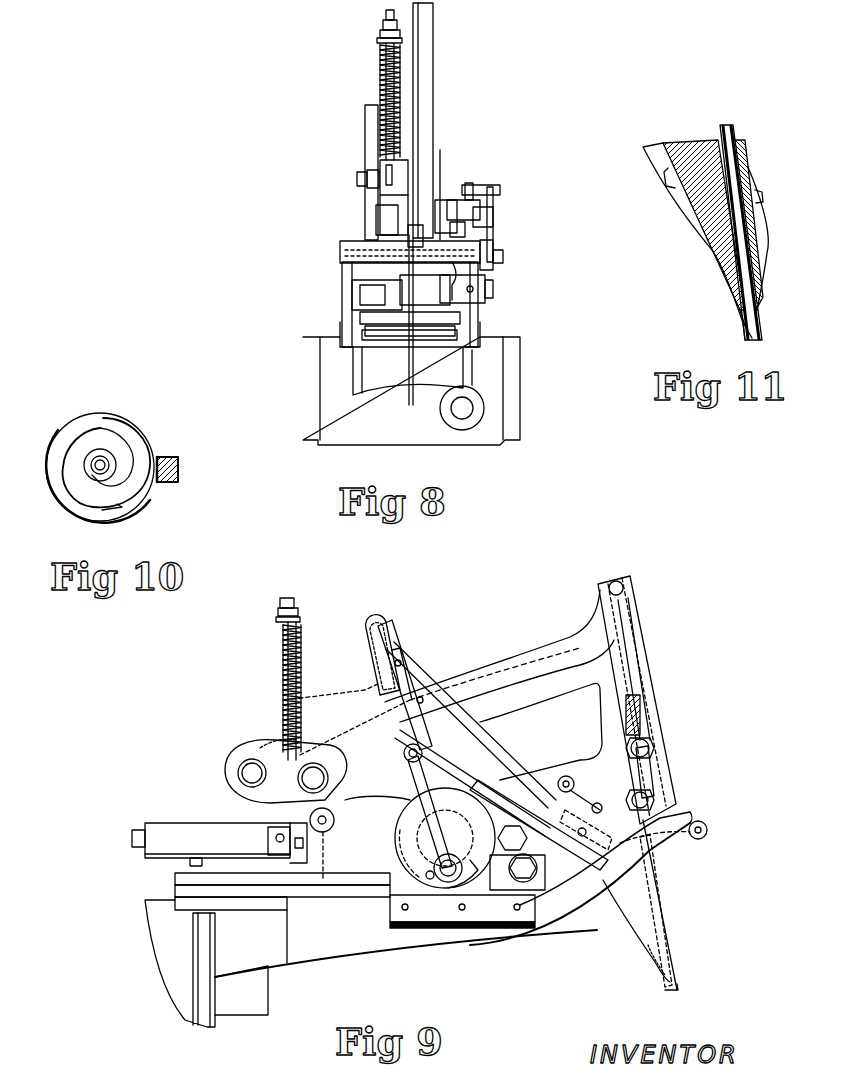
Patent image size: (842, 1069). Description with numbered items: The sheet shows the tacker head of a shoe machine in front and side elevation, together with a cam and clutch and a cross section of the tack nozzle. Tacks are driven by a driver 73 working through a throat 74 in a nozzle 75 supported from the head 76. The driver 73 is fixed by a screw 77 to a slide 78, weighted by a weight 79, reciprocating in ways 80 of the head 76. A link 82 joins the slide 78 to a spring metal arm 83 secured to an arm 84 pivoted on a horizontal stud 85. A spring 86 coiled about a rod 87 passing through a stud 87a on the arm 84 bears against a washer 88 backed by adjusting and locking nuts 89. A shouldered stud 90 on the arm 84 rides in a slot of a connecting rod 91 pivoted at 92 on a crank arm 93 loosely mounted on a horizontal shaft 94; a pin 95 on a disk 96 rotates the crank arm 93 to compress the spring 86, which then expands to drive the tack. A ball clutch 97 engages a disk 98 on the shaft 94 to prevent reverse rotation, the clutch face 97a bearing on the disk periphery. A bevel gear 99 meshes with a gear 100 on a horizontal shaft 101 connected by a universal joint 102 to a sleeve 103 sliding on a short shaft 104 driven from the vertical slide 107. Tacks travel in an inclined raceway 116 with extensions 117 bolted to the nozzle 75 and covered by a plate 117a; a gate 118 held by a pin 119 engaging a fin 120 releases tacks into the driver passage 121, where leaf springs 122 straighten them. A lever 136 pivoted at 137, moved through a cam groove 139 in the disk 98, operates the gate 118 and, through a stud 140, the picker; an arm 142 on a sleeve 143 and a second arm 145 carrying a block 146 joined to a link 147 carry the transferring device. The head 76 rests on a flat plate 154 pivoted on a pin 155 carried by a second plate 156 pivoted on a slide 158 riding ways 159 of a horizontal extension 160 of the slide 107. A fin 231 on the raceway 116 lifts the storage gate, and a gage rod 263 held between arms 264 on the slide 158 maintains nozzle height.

In FIG. 11, the driver 73 is at (736, 127).
In FIG. 9, the driver 73 is at (678, 991).
In FIG. 9, the throat 74 is at (672, 920).
In FIG. 8, the nozzle 75 is at (410, 392).
In FIG. 11, the nozzle 75 is at (672, 143).
In FIG. 9, the nozzle 75 is at (640, 930).
In FIG. 8, the head 76 is at (435, 100).
In FIG. 9, the head 76 is at (522, 655).
In FIG. 9, the screw 77 is at (656, 785).
In FIG. 9, the slide 78 is at (652, 762).
In FIG. 9, the weight 79 is at (642, 715).
In FIG. 9, the ways 80 is at (645, 661).
In FIG. 8, the link 82 is at (390, 198).
In FIG. 9, the link 82 is at (652, 770).
In FIG. 8, the spring metal arm 83 is at (385, 212).
In FIG. 9, the spring metal arm 83 is at (513, 795).
In FIG. 8, the arm 84 is at (378, 185).
In FIG. 9, the arm 84 is at (275, 760).
In FIG. 9, the horizontal stud 85 is at (252, 773).
In FIG. 8, the spring 86 is at (380, 94).
In FIG. 9, the spring 86 is at (302, 690).
In FIG. 8, the rod 87 is at (380, 70).
In FIG. 9, the rod 87 is at (300, 655).
In FIG. 9, the horizontal stud 87a is at (300, 779).
In FIG. 8, the washer 88 is at (377, 42).
In FIG. 9, the washer 88 is at (300, 620).
In FIG. 8, the adjusting and locking nuts 89 is at (383, 28).
In FIG. 9, the adjusting and locking nuts 89 is at (297, 613).
In FIG. 9, the shouldered stud 90 is at (410, 700).
In FIG. 8, the connecting rod 91 is at (370, 123).
In FIG. 9, the connecting rod 91 is at (440, 690).
In FIG. 9, the pivot 92 is at (455, 865).
In FIG. 9, the crank arm 93 is at (480, 880).
In FIG. 8, the horizontal shaft 94 is at (503, 258).
In FIG. 10, the horizontal shaft 94 is at (100, 463).
In FIG. 9, the horizontal shaft 94 is at (392, 852).
In FIG. 9, the pin 95 is at (440, 882).
In FIG. 9, the disk 96 is at (516, 882).
In FIG. 10, the ball clutch 97 is at (180, 469).
In FIG. 10, the block face 97a is at (178, 483).
In FIG. 10, the disk 98 is at (150, 437).
In FIG. 9, the bevel gear 99 is at (360, 862).
In FIG. 9, the bevel gear 100 is at (409, 829).
In FIG. 9, the horizontal shaft 101 is at (323, 885).
In FIG. 9, the universal joint 102 is at (303, 850).
In FIG. 9, the sleeve 103 is at (170, 828).
In FIG. 9, the short shaft 104 is at (135, 840).
In FIG. 8, the vertical slide 107 is at (312, 352).
In FIG. 9, the vertical slide 107 is at (198, 962).
In FIG. 9, the raceway 116 is at (376, 625).
In FIG. 9, the extensions 117 is at (586, 850).
In FIG. 9, the plate 117a is at (541, 731).
In FIG. 9, the gate 118 is at (566, 776).
In FIG. 9, the pin 119 is at (598, 803).
In FIG. 9, the fin 120 is at (580, 800).
In FIG. 9, the driver passage 121 is at (700, 846).
In FIG. 11, the leaf springs 122 is at (775, 292).
In FIG. 8, the lever 136 is at (490, 285).
In FIG. 8, the pivot 137 is at (500, 252).
In FIG. 10, the cam groove 139 is at (118, 425).
In FIG. 8, the stud 140 is at (470, 290).
In FIG. 8, the arm 142 is at (446, 245).
In FIG. 8, the sleeve 143 is at (455, 205).
In FIG. 8, the second arm 145 is at (472, 185).
In FIG. 8, the block 146 is at (488, 190).
In FIG. 8, the link 147 is at (490, 215).
In FIG. 9, the flat plate 154 is at (180, 877).
In FIG. 9, the pin 155 is at (195, 860).
In FIG. 9, the flat plate 156 is at (180, 890).
In FIG. 8, the slide 158 is at (350, 332).
In FIG. 9, the slide 158 is at (462, 925).
In FIG. 8, the ways 159 is at (362, 328).
In FIG. 8, the horizontal extension 160 is at (370, 350).
In FIG. 9, the horizontal extension 160 is at (437, 930).
In FIG. 9, the fin 231 is at (396, 650).
In FIG. 8, the gage rod 263 is at (355, 250).
In FIG. 9, the gage rod 263 is at (706, 828).
In FIG. 8, the arms 264 is at (340, 270).
In FIG. 9, the arms 264 is at (622, 870).